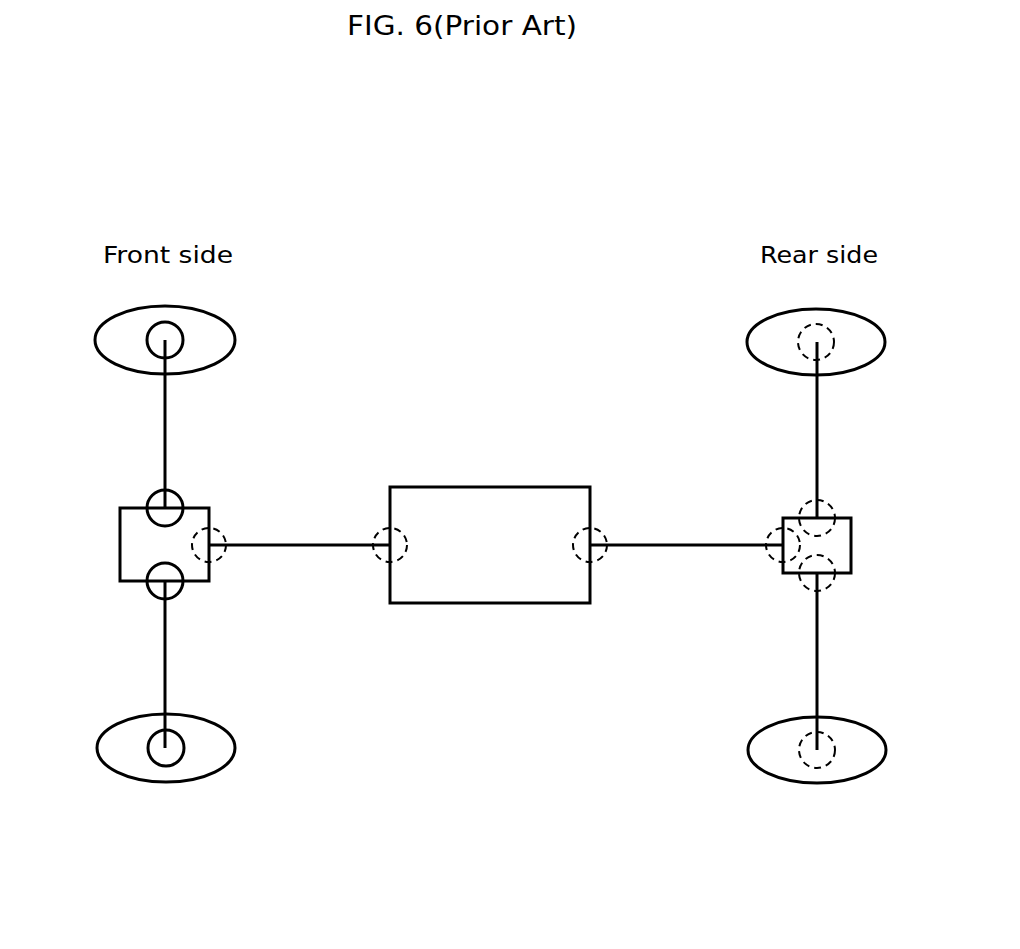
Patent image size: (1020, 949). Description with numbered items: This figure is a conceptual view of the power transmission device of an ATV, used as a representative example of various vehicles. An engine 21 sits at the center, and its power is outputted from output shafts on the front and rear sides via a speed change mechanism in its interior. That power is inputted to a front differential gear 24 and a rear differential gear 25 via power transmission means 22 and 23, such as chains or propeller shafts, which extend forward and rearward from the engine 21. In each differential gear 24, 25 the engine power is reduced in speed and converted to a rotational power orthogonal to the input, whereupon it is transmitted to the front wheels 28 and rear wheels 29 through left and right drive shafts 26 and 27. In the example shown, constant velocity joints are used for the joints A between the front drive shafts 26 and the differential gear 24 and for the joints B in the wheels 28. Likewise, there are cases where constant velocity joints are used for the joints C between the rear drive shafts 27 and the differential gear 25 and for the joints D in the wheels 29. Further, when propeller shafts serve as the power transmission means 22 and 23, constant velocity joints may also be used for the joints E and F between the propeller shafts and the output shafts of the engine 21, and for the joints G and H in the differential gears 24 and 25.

The engine 21 is at (493, 487).
The power transmission means 22 is at (298, 545).
The power transmission means 23 is at (690, 545).
The differential gear 24 is at (120, 545).
The differential gear 25 is at (851, 545).
The drive shaft 26 is at (165, 428).
The drive shaft 27 is at (817, 422).
The wheel 28 is at (100, 355).
The wheel 29 is at (880, 359).
The joint A is at (178, 494).
The joint B is at (180, 353).
The joint C is at (808, 505).
The joint D is at (796, 343).
The joint E is at (376, 556).
The joint F is at (601, 558).
The joint G is at (222, 558).
The joint H is at (768, 557).